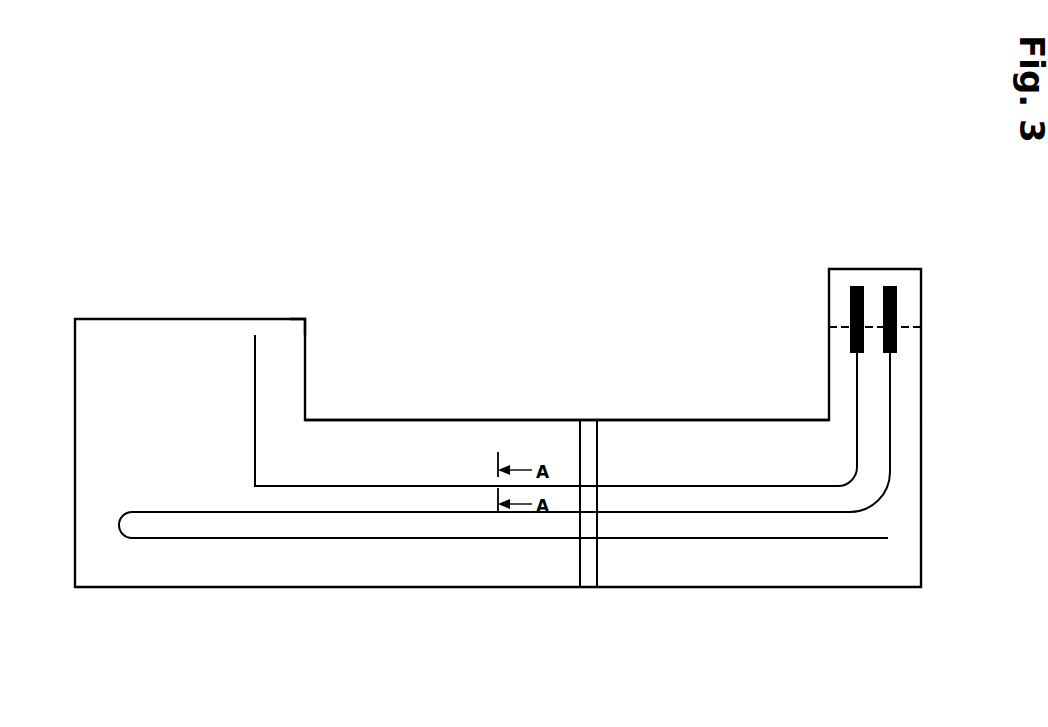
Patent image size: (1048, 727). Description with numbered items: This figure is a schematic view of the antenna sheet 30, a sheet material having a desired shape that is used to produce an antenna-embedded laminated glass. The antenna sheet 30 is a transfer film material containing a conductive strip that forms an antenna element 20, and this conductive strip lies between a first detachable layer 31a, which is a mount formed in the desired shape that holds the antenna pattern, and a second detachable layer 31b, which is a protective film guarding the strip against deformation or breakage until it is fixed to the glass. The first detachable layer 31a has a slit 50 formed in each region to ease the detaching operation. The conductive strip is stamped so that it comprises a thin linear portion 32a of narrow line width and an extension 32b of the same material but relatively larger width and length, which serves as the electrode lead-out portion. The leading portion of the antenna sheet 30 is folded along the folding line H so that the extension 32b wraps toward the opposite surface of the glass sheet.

The antenna sheet 30 is at (770, 240).
The first detachable layer 31a is at (355, 426).
The second detachable layer 31b is at (289, 326).
The antenna element 20 is at (318, 492).
The thin linear portion 32a is at (451, 488).
The extension 32b is at (850, 300).
The slit 50 is at (590, 424).
The folding line H is at (903, 332).